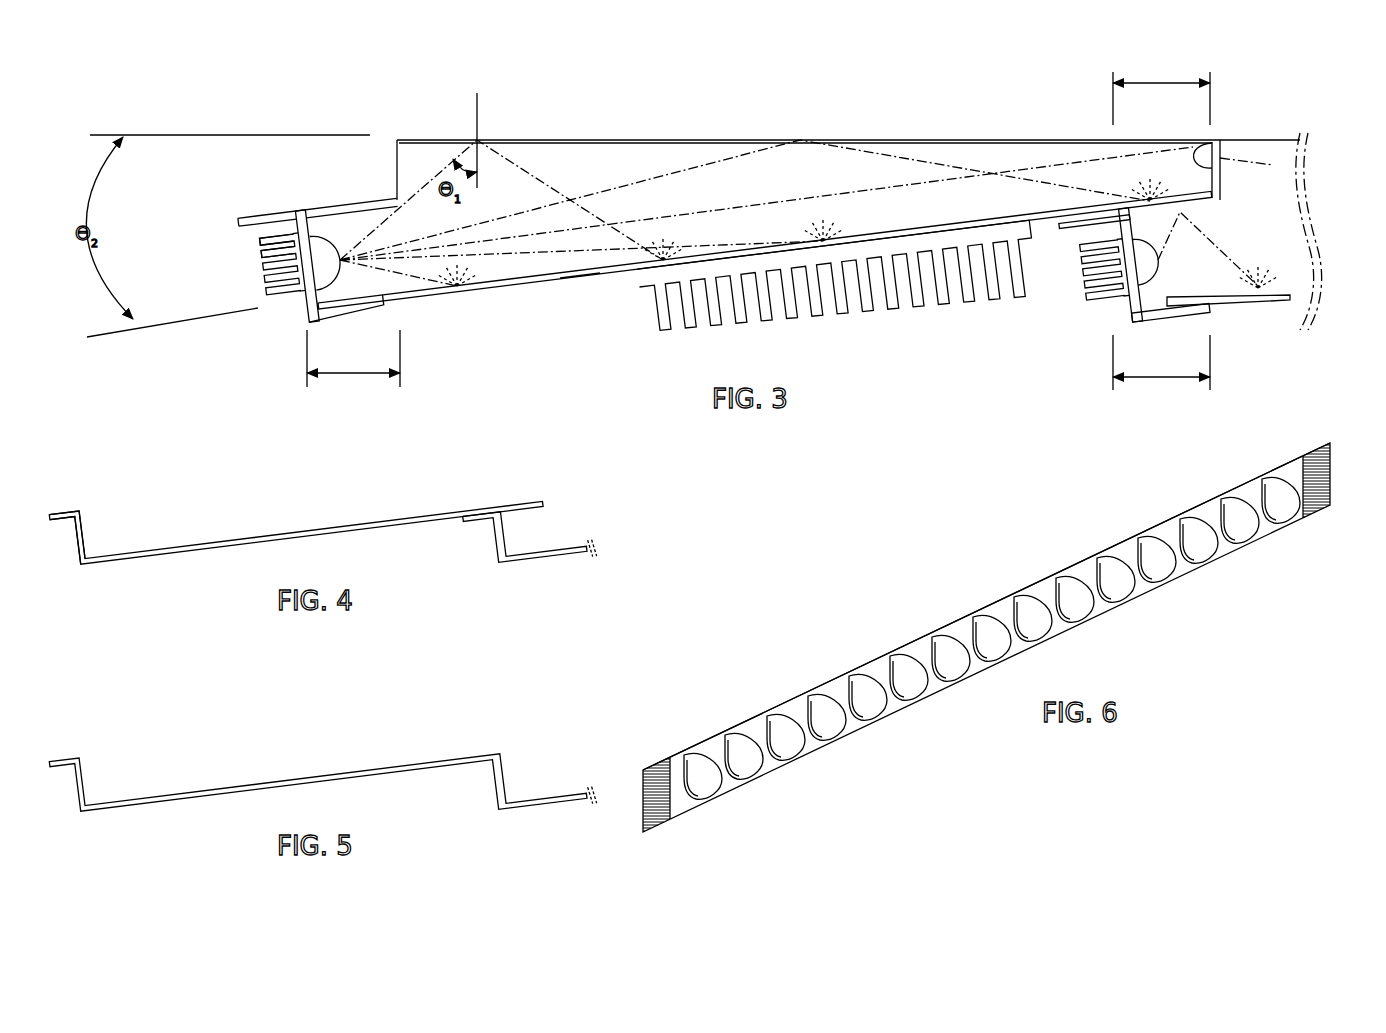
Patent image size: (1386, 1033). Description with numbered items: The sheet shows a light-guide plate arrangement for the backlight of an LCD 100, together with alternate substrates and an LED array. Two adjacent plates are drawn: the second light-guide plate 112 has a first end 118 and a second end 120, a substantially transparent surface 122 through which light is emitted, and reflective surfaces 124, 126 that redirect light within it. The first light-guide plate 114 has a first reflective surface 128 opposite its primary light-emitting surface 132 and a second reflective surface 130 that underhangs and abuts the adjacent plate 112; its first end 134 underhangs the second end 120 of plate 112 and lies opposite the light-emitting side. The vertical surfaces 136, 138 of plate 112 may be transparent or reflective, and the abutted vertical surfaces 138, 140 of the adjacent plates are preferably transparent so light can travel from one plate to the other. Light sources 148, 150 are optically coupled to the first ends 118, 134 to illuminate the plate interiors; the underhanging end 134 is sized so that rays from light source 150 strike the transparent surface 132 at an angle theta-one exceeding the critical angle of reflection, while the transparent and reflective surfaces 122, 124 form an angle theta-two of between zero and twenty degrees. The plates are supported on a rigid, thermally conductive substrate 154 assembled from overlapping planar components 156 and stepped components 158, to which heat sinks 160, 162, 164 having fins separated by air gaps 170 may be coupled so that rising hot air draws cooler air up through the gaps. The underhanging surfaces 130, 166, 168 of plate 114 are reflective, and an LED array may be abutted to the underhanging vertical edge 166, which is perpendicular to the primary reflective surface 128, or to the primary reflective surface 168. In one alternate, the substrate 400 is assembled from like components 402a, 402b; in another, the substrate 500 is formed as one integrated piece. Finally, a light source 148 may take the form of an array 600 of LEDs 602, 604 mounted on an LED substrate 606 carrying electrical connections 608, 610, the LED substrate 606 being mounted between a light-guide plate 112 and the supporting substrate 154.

In FIG. 3, the LCD 100 is at (338, 97).
In FIG. 3, the second light-guide plate 112 is at (643, 155).
In FIG. 3, the first light-guide plate 114 is at (1290, 228).
In FIG. 3, the first end 118 is at (353, 366).
In FIG. 3, the second end 120 is at (1161, 91).
In FIG. 3, the substantially transparent surface 122 is at (567, 147).
In FIG. 3, the reflective surface 124 is at (765, 250).
In FIG. 3, the reflective surface 126 is at (351, 211).
In FIG. 3, the first reflective surface 128 is at (1290, 290).
In FIG. 3, the second reflective surface 130 is at (1197, 208).
In FIG. 3, the primary light-emitting surface 132 is at (1278, 142).
In FIG. 3, the first end 134 is at (1161, 370).
In FIG. 3, the vertical surface 136 is at (399, 162).
In FIG. 3, the vertical surface 138 is at (1217, 148).
In FIG. 3, the vertical surface 140 is at (1228, 150).
In FIG. 3, the light source 148 is at (339, 262).
In FIG. 3, the light source 150 is at (1146, 261).
In FIG. 3, the substrate 154 is at (581, 280).
In FIG. 3, the planar component 156 is at (469, 291).
In FIG. 3, the stepped component 158 is at (318, 212).
In FIG. 3, the heat sink 160 is at (282, 264).
In FIG. 3, the heat sink 162 is at (837, 282).
In FIG. 3, the heat sink 164 is at (1105, 270).
In FIG. 3, the underhanging vertical edge 166 is at (1100, 269).
In FIG. 3, the primary reflective surface 168 is at (1171, 312).
In FIG. 3, the air gaps 170 is at (278, 246).
In FIG. 4, the substrate 400 is at (296, 510).
In FIG. 4, the like component 402a is at (67, 539).
In FIG. 4, the like component 402b is at (530, 536).
In FIG. 5, the substrate 500 is at (242, 783).
In FIG. 6, the array of LEDs 600 is at (848, 640).
In FIG. 6, the LED 602 is at (708, 785).
In FIG. 6, the LED 604 is at (743, 767).
In FIG. 6, the LED substrate 606 is at (995, 601).
In FIG. 6, the electrical connection 608 is at (653, 765).
In FIG. 6, the electrical connection 610 is at (1318, 513).